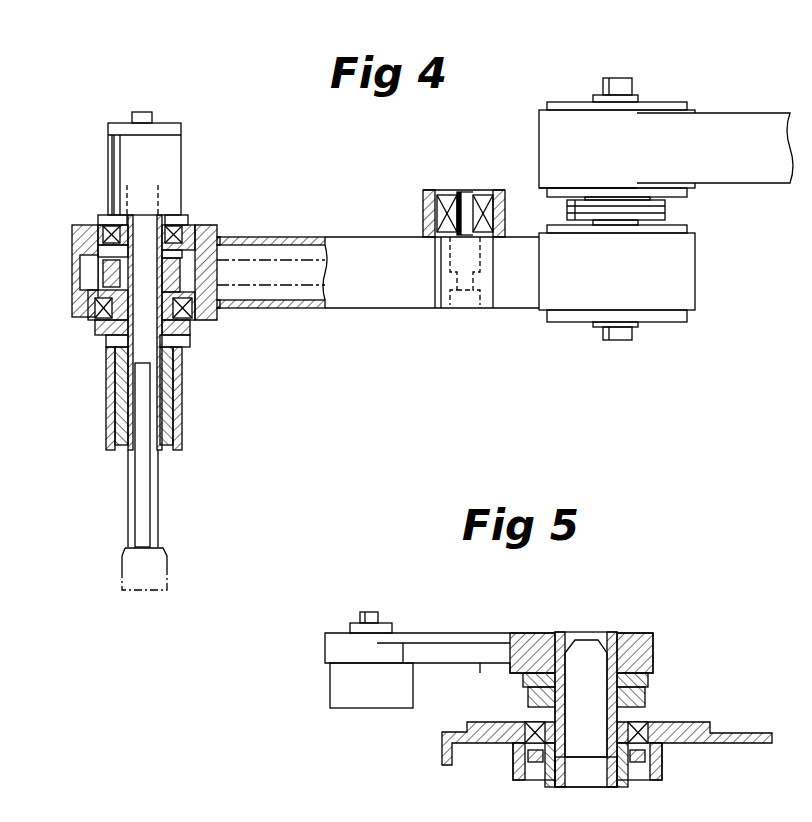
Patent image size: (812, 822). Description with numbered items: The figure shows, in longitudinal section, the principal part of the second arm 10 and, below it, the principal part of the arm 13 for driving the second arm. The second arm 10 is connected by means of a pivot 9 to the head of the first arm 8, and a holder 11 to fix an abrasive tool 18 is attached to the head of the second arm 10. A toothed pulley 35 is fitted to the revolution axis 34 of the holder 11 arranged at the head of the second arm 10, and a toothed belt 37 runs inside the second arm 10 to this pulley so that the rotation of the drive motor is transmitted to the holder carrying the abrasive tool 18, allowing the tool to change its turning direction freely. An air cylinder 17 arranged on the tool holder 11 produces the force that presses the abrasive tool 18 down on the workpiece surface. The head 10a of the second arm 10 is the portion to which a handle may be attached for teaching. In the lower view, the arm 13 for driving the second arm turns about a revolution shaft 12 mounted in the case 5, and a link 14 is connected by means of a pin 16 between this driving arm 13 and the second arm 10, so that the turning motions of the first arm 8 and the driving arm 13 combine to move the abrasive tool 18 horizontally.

In FIG. 5, the case 5 is at (690, 722).
In FIG. 4, the No.1 arm 8 is at (738, 120).
In FIG. 4, the pivot 9 is at (632, 85).
In FIG. 4, the No.2 arm 10 is at (396, 308).
In FIG. 4, the head of No.2 arm 10a is at (205, 228).
In FIG. 4, the holder 11 is at (150, 521).
In FIG. 5, the revolution shaft 12 is at (584, 652).
In FIG. 5, the arm for driving No.2 arm 13 is at (457, 633).
In FIG. 4, the link 14 is at (428, 190).
In FIG. 5, the link 14 is at (351, 700).
In FIG. 4, the pin 16 is at (471, 200).
In FIG. 4, the air cylinder 17 is at (108, 155).
In FIG. 4, the abrasive tool 18 is at (173, 578).
In FIG. 4, the revolution axis 34 is at (126, 326).
In FIG. 4, the toothed pulley 35 is at (103, 272).
In FIG. 4, the toothed belt 37 is at (262, 260).